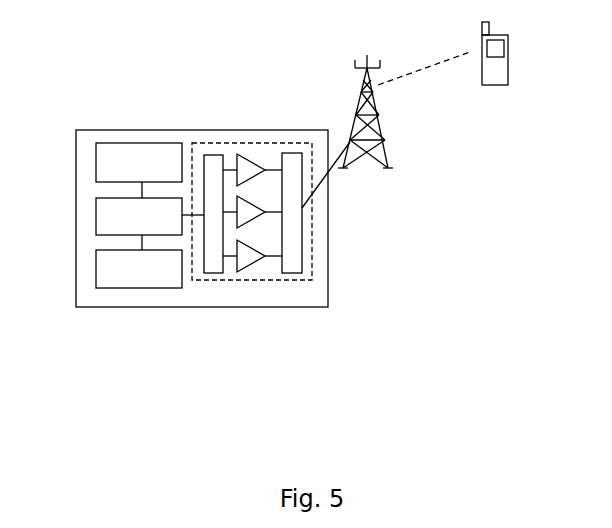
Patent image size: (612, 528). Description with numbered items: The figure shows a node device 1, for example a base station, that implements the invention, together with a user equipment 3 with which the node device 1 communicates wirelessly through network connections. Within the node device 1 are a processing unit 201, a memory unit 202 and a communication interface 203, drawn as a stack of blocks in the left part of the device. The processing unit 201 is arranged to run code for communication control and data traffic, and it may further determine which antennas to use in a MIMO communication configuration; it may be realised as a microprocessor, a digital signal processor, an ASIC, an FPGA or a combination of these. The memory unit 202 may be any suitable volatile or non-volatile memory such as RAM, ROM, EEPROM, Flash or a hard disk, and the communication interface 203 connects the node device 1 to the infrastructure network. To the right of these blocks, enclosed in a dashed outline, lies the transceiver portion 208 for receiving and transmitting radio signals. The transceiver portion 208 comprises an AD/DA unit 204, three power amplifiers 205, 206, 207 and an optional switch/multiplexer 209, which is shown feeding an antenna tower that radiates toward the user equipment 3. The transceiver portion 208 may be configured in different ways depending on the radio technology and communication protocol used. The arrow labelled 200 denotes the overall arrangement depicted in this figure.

The node device 1 is at (78, 297).
The user equipment 3 is at (508, 63).
The radio communication system 200 is at (128, 346).
The processing unit 201 is at (150, 216).
The memory unit 202 is at (139, 162).
The communication interface 203 is at (139, 269).
The AD/DA unit 204 is at (213, 155).
The power amplifier 205 is at (244, 154).
The power amplifier 206 is at (238, 273).
The power amplifier 207 is at (258, 217).
The transceiver portion 208 is at (192, 280).
The switch/multiplexer 209 is at (295, 153).